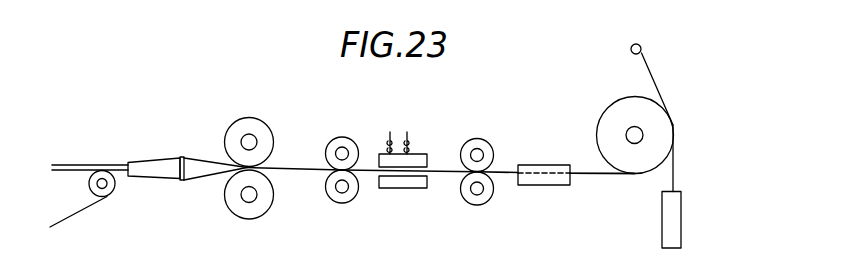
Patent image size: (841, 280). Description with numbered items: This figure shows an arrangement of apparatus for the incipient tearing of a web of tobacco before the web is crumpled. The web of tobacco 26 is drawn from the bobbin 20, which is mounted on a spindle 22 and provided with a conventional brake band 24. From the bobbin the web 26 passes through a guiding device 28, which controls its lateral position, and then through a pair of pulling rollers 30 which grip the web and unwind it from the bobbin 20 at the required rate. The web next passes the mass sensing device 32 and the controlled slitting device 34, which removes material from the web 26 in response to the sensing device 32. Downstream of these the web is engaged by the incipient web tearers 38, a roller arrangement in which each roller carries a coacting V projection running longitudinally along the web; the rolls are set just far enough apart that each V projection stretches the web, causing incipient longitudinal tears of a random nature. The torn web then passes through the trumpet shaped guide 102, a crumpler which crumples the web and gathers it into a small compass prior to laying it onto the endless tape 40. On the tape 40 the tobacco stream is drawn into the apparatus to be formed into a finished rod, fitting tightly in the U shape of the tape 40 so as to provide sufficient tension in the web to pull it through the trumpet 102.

The bobbin 20 is at (628, 96).
The spindle 22 is at (626, 137).
The brake band 24 is at (673, 168).
The web of tobacco 26 is at (607, 174).
The guiding device 28 is at (543, 185).
The pulling rollers 30 is at (477, 138).
The mass sensing device 32 is at (403, 189).
The controlled slitting device 34 is at (341, 137).
The incipient web tearers 38 is at (240, 118).
The endless tape 40 is at (78, 212).
The trumpet shaped guide 102 is at (150, 158).